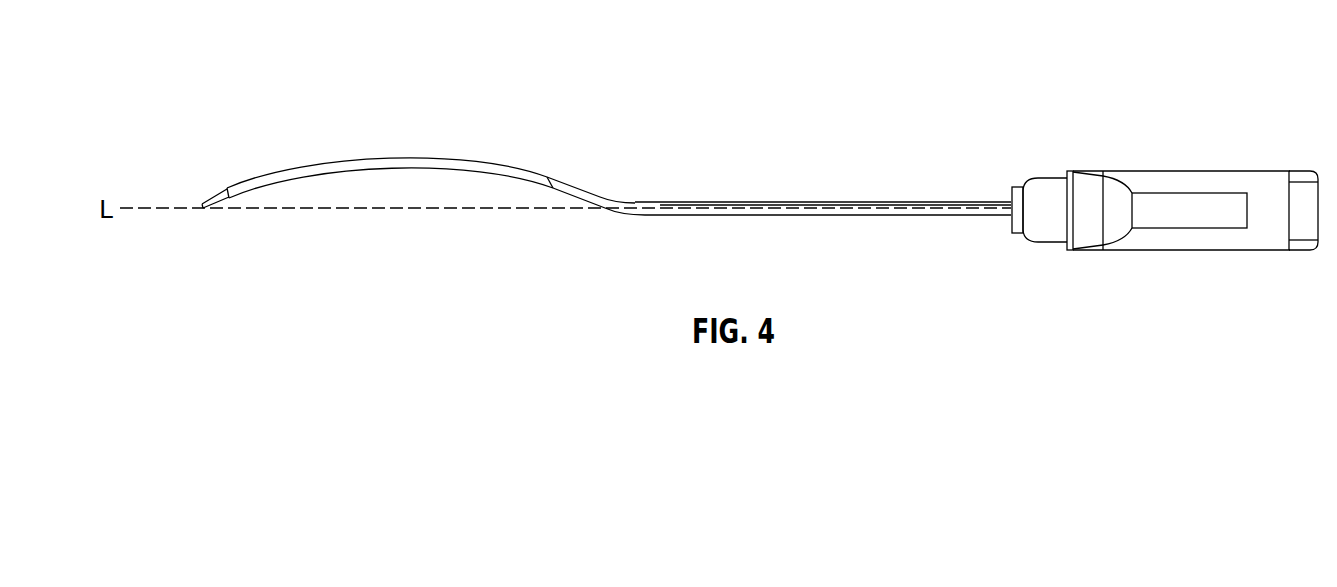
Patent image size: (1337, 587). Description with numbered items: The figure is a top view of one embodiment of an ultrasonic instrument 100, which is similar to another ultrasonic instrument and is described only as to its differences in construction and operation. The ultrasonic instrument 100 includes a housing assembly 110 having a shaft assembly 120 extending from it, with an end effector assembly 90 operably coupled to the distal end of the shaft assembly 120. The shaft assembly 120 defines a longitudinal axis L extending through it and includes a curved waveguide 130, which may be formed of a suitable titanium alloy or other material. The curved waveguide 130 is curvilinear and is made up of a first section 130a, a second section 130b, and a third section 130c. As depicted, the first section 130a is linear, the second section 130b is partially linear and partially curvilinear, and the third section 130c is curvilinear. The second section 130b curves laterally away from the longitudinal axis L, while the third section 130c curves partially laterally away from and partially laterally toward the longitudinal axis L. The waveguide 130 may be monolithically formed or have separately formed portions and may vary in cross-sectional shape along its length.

The ultrasonic instrument 100 is at (655, 80).
The end effector assembly 90 is at (216, 193).
The housing assembly 110 is at (1220, 170).
The shaft assembly 120 is at (886, 200).
The curved waveguide 130 is at (723, 198).
The first section 130a is at (925, 215).
The second section 130b is at (593, 192).
The third section 130c is at (393, 157).